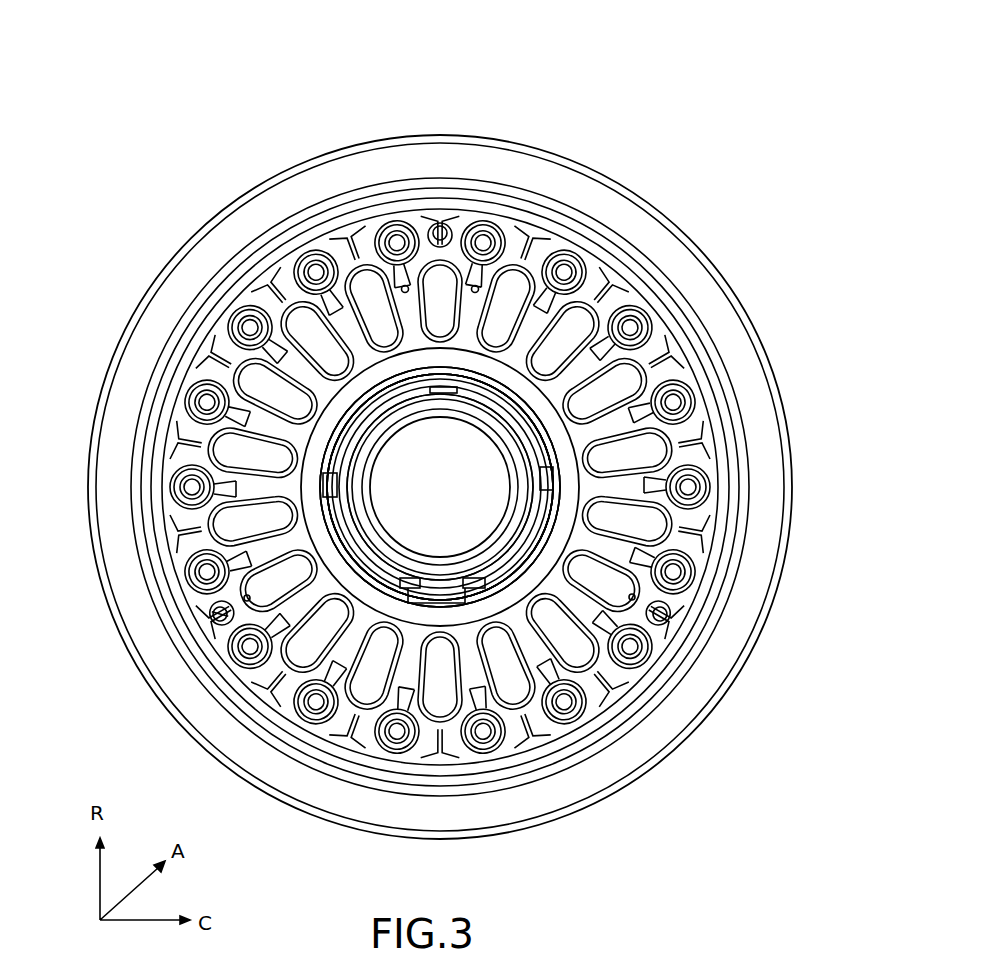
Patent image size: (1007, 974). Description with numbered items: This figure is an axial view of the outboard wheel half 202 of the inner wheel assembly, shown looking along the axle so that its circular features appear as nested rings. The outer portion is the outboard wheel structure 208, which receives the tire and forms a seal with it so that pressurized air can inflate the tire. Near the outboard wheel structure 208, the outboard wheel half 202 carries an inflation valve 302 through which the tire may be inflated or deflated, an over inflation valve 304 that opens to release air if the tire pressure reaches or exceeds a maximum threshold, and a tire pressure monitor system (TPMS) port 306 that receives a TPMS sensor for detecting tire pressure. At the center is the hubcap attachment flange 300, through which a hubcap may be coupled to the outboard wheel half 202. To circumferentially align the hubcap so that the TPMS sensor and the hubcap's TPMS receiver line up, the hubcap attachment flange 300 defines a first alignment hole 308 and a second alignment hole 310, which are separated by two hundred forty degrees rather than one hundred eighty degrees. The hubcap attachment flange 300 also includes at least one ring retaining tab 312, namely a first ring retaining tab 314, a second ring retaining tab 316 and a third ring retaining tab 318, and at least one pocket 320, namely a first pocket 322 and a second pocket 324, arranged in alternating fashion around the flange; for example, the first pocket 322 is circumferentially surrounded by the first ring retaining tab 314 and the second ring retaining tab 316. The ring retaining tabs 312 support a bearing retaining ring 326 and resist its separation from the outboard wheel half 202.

The outboard wheel half 202 is at (158, 106).
The outboard wheel structure 208 is at (789, 522).
The hubcap attachment flange 300 is at (387, 512).
The inflation valve 302 is at (444, 224).
The over inflation valve 304 is at (670, 616).
The tire pressure monitor system (TPMS) port 306 is at (212, 616).
The first alignment hole 308 is at (340, 544).
The second alignment hole 310 is at (443, 368).
The ring retaining tab 312 is at (361, 398).
The first ring retaining tab 314 is at (367, 393).
The second ring retaining tab 316 is at (437, 372).
The third ring retaining tab 318 is at (523, 395).
The pocket 320 is at (384, 389).
The first pocket 322 is at (402, 380).
The second pocket 324 is at (487, 385).
The bearing retaining ring 326 is at (538, 447).